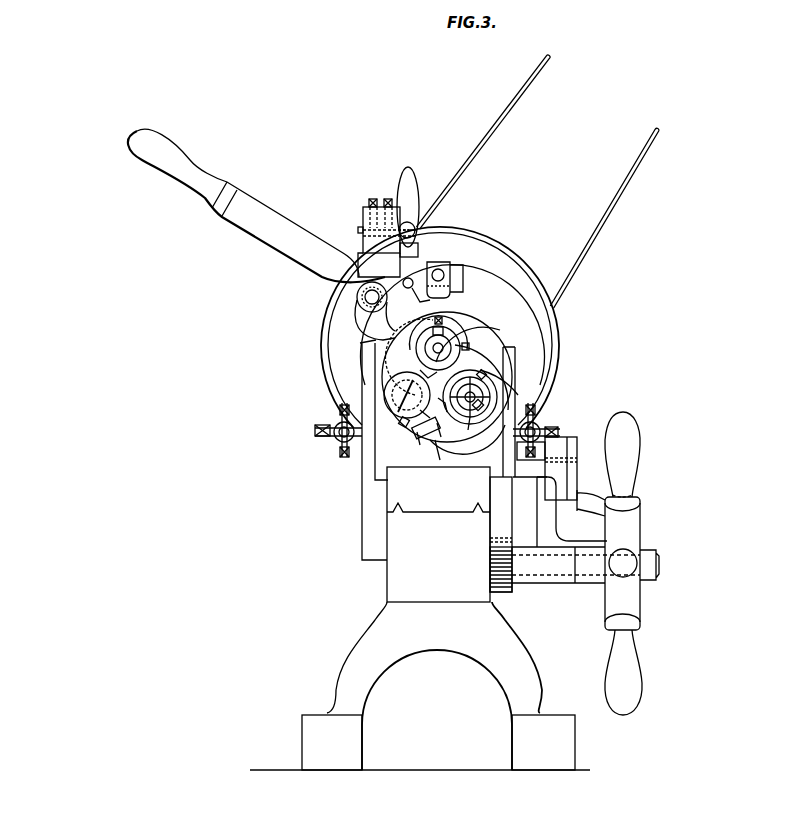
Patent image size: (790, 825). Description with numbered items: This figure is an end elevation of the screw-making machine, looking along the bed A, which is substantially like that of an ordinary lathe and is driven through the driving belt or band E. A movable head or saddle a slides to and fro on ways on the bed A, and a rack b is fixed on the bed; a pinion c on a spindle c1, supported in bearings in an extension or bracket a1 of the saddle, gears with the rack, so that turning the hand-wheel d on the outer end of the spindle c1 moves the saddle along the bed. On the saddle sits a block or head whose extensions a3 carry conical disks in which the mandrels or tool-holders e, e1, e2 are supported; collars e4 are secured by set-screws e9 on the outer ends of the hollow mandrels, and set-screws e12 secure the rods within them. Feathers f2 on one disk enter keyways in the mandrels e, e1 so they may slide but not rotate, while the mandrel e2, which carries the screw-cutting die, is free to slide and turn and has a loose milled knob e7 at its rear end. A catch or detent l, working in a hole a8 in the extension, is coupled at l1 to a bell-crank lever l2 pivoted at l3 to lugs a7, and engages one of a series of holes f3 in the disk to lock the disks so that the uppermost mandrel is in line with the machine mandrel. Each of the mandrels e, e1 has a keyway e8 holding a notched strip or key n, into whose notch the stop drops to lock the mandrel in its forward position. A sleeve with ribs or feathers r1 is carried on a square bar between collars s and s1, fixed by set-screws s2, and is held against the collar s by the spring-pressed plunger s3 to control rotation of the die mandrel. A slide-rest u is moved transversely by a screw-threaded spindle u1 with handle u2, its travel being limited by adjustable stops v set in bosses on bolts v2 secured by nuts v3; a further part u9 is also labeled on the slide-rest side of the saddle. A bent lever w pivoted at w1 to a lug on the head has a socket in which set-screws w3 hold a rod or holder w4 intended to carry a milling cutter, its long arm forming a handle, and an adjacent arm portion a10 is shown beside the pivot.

The bed A is at (438, 618).
The movable head or saddle a is at (453, 450).
The extension or bracket a1 is at (564, 512).
The extensions of the block or head a3 is at (481, 377).
The lugs a7 is at (403, 277).
The hole a8 is at (418, 300).
The arm a10 is at (363, 324).
The rack b is at (501, 534).
The pinion c is at (490, 568).
The spindle c1 is at (576, 565).
The hand-wheel d is at (618, 563).
The disk B is at (440, 327).
The driving belt or band E is at (537, 181).
The mandrel or tool-holder e is at (447, 377).
The mandrel or tool-holder e1 is at (452, 410).
The mandrel or tool-holder e2 is at (412, 365).
The collars e4 is at (484, 355).
The milled head or knob e7 is at (407, 413).
The keyway or groove e8 is at (455, 376).
The set-screws e9 is at (458, 322).
The set-screws e12 is at (499, 367).
The feathers f2 is at (447, 385).
The holes f3 is at (438, 339).
The catch or detent l is at (408, 236).
The coupling l1 is at (450, 270).
The bent or bell-crank lever l2 is at (389, 230).
The pivot l3 is at (379, 266).
The strip or key n is at (446, 371).
The ribs or feathers r1 is at (435, 443).
The collar s is at (426, 443).
The collar s1 is at (419, 451).
The set-screws s2 is at (396, 435).
The rod or plunger s3 is at (436, 438).
The slide-rest u is at (547, 421).
The screw-threaded spindle u1 is at (531, 450).
The handle u2 is at (585, 470).
The clamp bar u9 is at (346, 435).
The adjustable stops v is at (548, 400).
The bolts or spindles v2 is at (441, 431).
The nuts v3 is at (461, 440).
The bent arm or lever w is at (256, 205).
The pivot w1 is at (357, 297).
The set-screws w3 is at (388, 199).
The rod, bar, or holder w4 is at (350, 231).